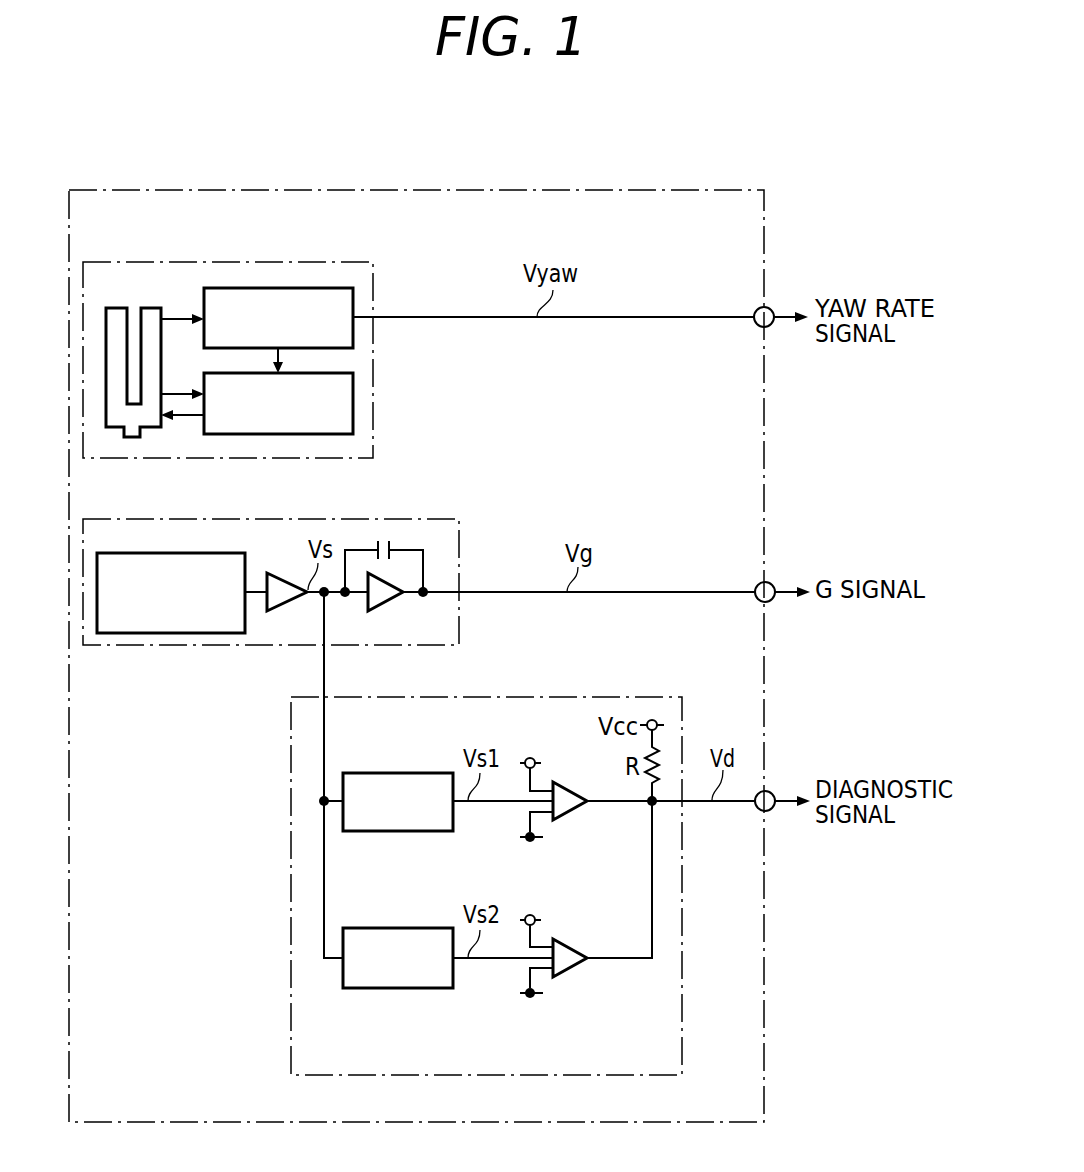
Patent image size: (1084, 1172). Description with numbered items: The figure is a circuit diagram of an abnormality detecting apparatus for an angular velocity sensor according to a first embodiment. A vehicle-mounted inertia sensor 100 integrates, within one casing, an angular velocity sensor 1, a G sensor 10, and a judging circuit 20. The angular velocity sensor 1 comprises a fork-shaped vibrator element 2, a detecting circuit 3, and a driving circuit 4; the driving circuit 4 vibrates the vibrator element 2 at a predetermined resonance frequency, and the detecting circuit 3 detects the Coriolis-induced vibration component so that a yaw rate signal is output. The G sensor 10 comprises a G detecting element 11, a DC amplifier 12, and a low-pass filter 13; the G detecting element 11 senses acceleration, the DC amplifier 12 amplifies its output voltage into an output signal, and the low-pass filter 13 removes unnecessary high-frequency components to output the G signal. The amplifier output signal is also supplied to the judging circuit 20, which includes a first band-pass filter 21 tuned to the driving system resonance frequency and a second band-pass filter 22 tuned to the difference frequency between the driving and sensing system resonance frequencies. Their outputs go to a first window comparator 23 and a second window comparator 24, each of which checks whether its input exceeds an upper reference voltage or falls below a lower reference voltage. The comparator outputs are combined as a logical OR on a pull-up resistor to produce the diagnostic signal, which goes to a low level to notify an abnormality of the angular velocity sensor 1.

The inertia sensor 100 is at (580, 190).
The angular velocity sensor 1 is at (320, 260).
The vibrator element 2 is at (112, 428).
The detecting circuit 3 is at (353, 300).
The driving circuit 4 is at (353, 393).
The G sensor 10 is at (403, 519).
The G detecting element 11 is at (247, 613).
The DC amplifier 12 is at (287, 575).
The low-pass filter 13 is at (387, 608).
The judging circuit 20 is at (515, 697).
The first band-pass filter 21 is at (422, 831).
The second band-pass filter 22 is at (422, 988).
The first window comparator 23 is at (567, 817).
The second window comparator 24 is at (567, 975).